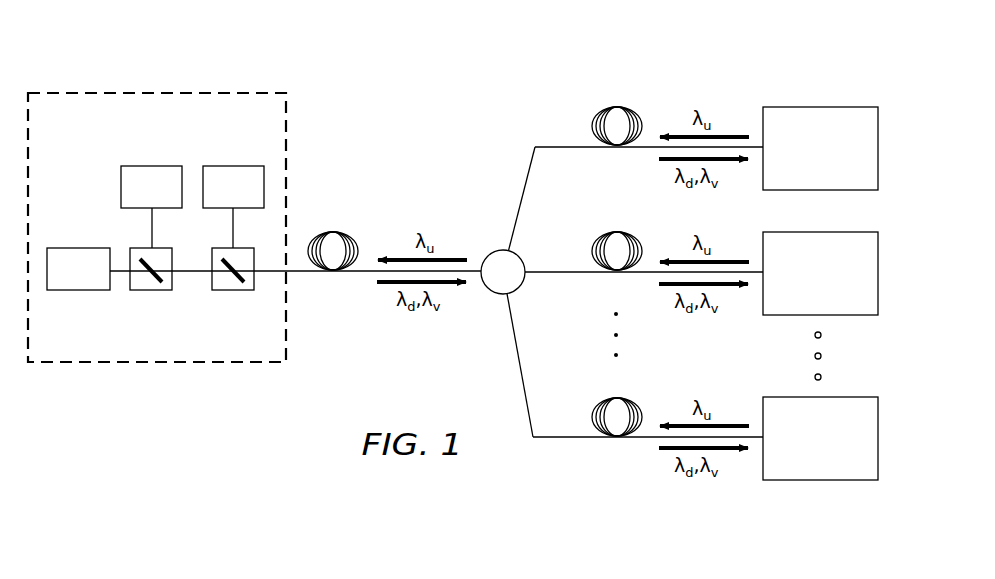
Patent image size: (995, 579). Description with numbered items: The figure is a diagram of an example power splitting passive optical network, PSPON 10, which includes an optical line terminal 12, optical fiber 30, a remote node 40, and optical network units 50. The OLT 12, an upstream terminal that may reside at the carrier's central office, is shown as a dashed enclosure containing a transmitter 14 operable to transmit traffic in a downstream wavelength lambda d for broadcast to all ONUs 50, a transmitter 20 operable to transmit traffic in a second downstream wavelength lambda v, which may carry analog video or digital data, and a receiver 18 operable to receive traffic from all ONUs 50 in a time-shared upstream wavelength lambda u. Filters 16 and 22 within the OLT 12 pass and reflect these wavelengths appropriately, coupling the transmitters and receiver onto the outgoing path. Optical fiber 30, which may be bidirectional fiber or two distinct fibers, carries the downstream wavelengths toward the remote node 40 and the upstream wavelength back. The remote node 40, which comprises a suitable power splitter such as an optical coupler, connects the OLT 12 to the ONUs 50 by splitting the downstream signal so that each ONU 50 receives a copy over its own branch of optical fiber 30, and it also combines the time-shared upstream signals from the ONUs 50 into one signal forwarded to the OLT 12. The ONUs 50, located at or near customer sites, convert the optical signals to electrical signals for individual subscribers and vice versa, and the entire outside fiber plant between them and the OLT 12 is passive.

The PSPON 10 is at (358, 58).
The optical line terminal 12 is at (106, 89).
The transmitter 14 is at (78, 292).
The filter 16 is at (148, 292).
The receiver 18 is at (147, 165).
The transmitter 20 is at (228, 165).
The filter 22 is at (231, 292).
The optical fiber 30 is at (328, 231).
The remote node 40 is at (492, 255).
The optical network unit 50 is at (826, 106).